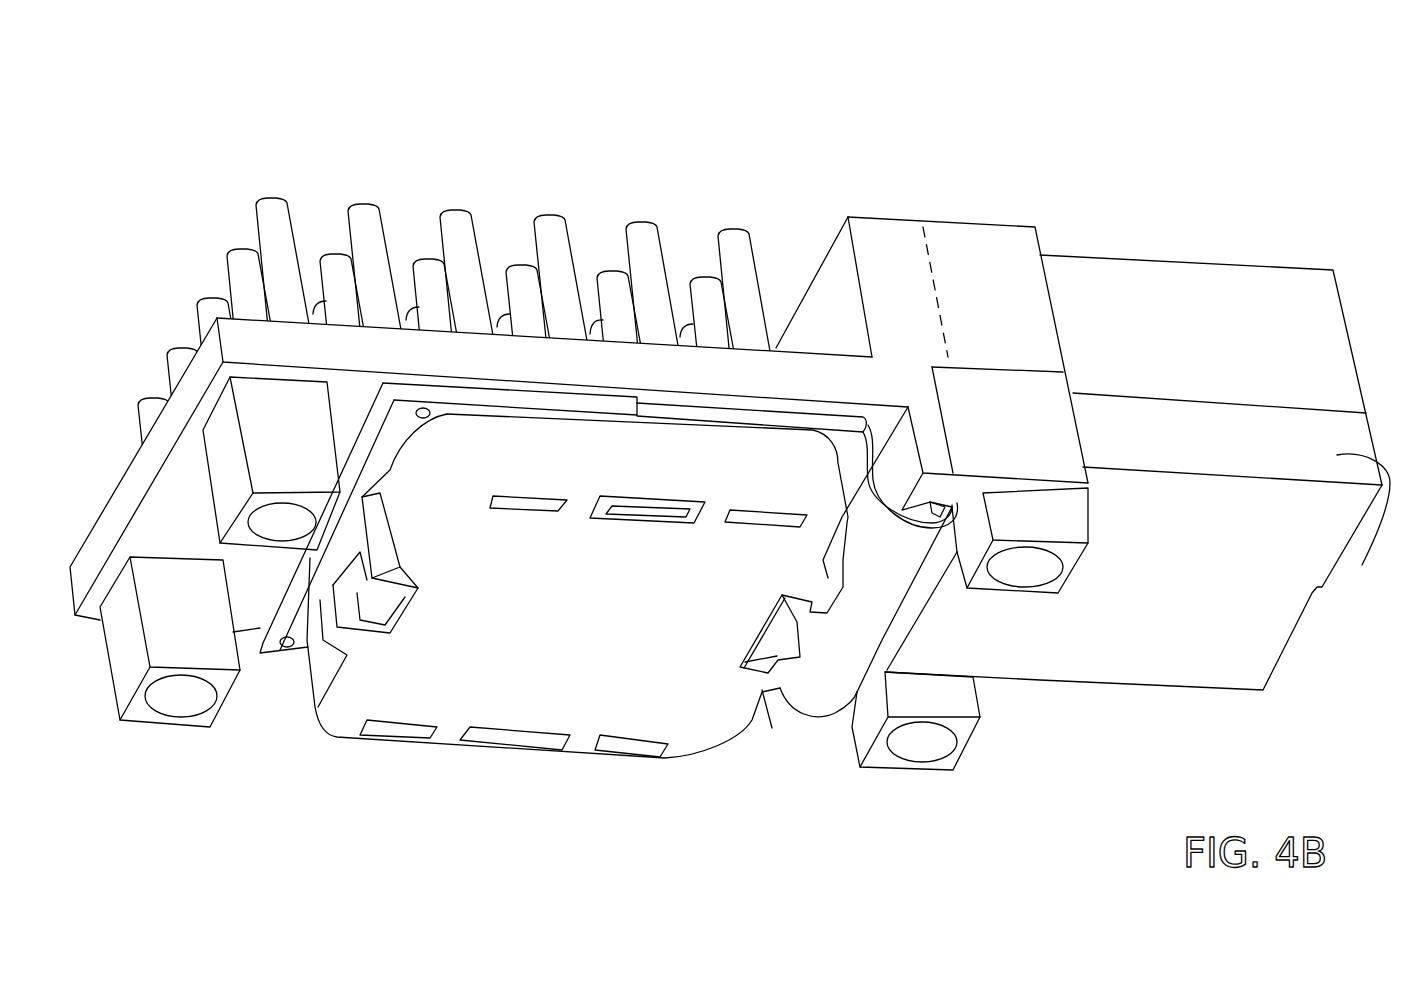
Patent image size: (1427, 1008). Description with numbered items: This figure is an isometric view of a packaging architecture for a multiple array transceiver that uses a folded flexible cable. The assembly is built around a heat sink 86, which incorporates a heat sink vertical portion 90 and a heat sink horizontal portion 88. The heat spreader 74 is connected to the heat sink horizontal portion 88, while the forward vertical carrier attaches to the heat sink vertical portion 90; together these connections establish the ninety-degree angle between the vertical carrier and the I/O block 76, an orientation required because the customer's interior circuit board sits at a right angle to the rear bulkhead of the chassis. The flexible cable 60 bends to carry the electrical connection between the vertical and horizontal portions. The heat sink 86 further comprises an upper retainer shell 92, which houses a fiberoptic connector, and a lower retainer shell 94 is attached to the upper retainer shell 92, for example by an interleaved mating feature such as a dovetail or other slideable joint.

The flexible cable 60 is at (828, 672).
The heat spreader 74 is at (419, 388).
The I/O block 76 is at (368, 687).
The heat sink 86 is at (648, 248).
The heat sink horizontal portion 88 is at (367, 413).
The heat sink vertical portion 90 is at (933, 285).
The upper retainer shell 92 is at (1207, 300).
The lower retainer shell 94 is at (1362, 565).